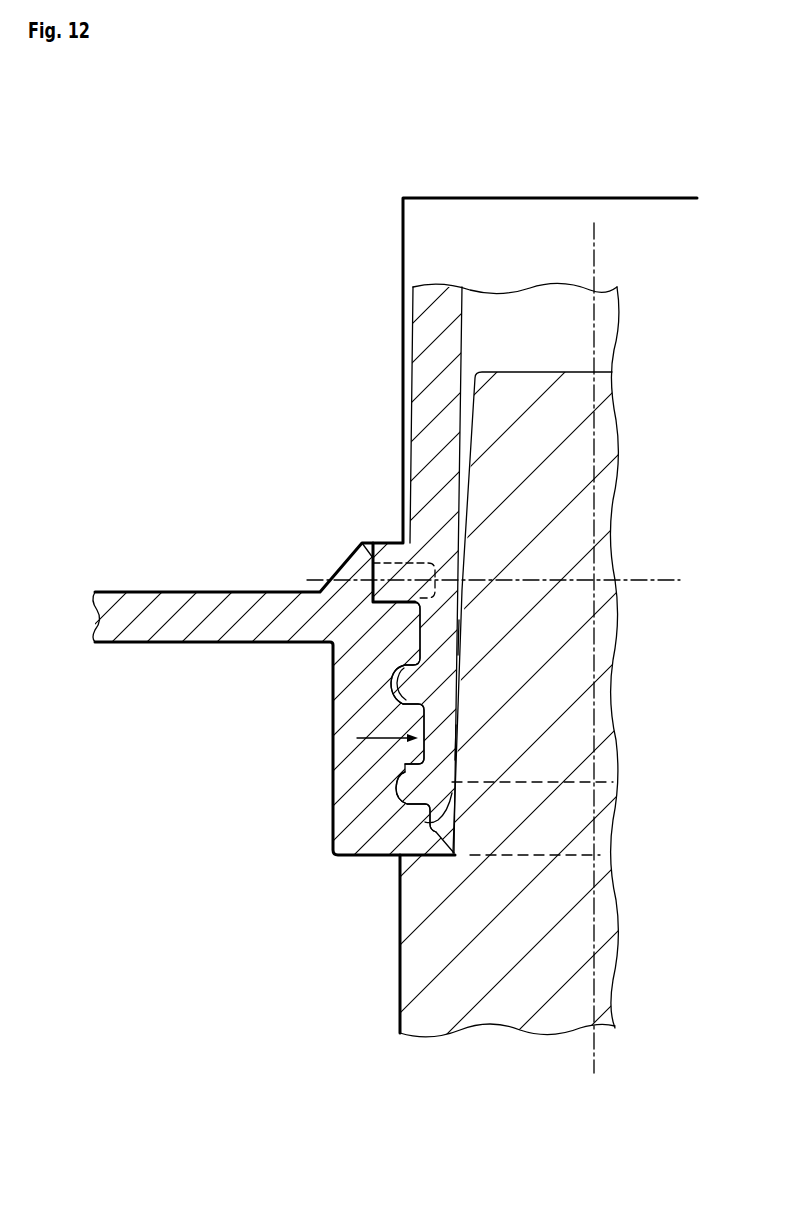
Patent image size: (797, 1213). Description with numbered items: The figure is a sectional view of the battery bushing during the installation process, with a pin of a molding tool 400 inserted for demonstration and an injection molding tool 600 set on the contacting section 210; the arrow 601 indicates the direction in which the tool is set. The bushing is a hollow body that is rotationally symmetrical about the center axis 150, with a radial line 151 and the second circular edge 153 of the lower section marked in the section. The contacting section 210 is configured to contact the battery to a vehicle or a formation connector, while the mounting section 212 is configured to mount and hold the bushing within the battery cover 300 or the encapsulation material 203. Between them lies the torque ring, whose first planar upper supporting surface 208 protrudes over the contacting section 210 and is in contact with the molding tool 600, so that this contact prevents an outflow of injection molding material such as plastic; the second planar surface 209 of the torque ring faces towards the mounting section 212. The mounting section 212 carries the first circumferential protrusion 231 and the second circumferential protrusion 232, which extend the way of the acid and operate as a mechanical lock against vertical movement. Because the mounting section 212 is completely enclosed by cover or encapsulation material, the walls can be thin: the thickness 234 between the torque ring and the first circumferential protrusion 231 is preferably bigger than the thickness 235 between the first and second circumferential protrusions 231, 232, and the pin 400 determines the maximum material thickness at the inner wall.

The molding tool 600 is at (632, 182).
The insertion direction 601 is at (442, 205).
The center axis 150 is at (596, 237).
The radial axis 151 is at (499, 553).
The second circular edge 153 is at (555, 781).
The pin of a molding tool 400 is at (540, 369).
The contacting section 210 is at (407, 445).
The first planar supporting surface 208 is at (385, 540).
The encapsulation material 203 is at (398, 606).
The battery cover 300 is at (200, 591).
The second planar surface 209 is at (399, 637).
The first circumferential protrusion 231 is at (390, 683).
The mounting section 212 is at (369, 714).
The second circumferential protrusion 232 is at (404, 799).
The thickness of the wall at a first location 234 is at (471, 637).
The thickness of the walls between protrusions 235 is at (471, 742).